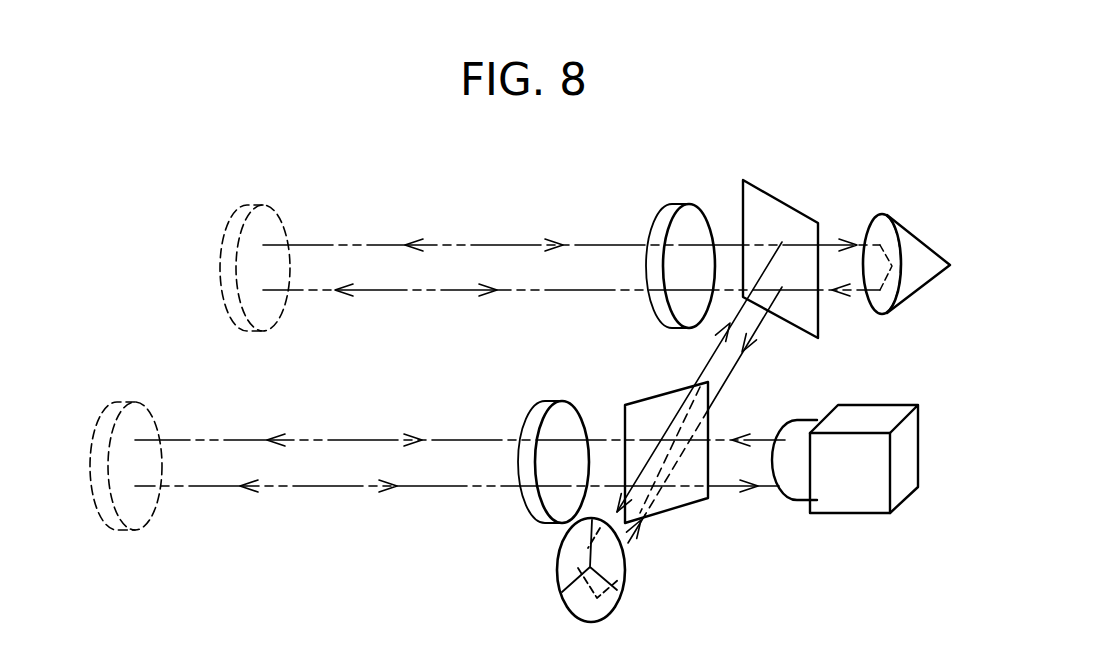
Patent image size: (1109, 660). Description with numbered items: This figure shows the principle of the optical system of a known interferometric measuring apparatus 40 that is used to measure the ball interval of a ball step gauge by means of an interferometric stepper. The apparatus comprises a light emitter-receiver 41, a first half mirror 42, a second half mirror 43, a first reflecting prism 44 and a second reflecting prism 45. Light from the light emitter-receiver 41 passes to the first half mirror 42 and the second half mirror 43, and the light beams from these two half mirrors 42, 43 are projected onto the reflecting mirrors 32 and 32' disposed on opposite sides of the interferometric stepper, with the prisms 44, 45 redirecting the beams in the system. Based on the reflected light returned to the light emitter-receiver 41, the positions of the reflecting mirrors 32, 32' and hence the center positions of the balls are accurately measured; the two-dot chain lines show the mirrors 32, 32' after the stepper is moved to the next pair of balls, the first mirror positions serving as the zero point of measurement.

The reflecting mirror 32 is at (339, 433).
The reflecting mirror 32' is at (467, 228).
The interferometric measuring apparatus 40 is at (847, 190).
The light emitter-receiver 41 is at (870, 412).
The first half mirror 42 is at (692, 495).
The second half mirror 43 is at (767, 200).
The first reflecting prism 44 is at (563, 568).
The second reflecting prism 45 is at (907, 238).